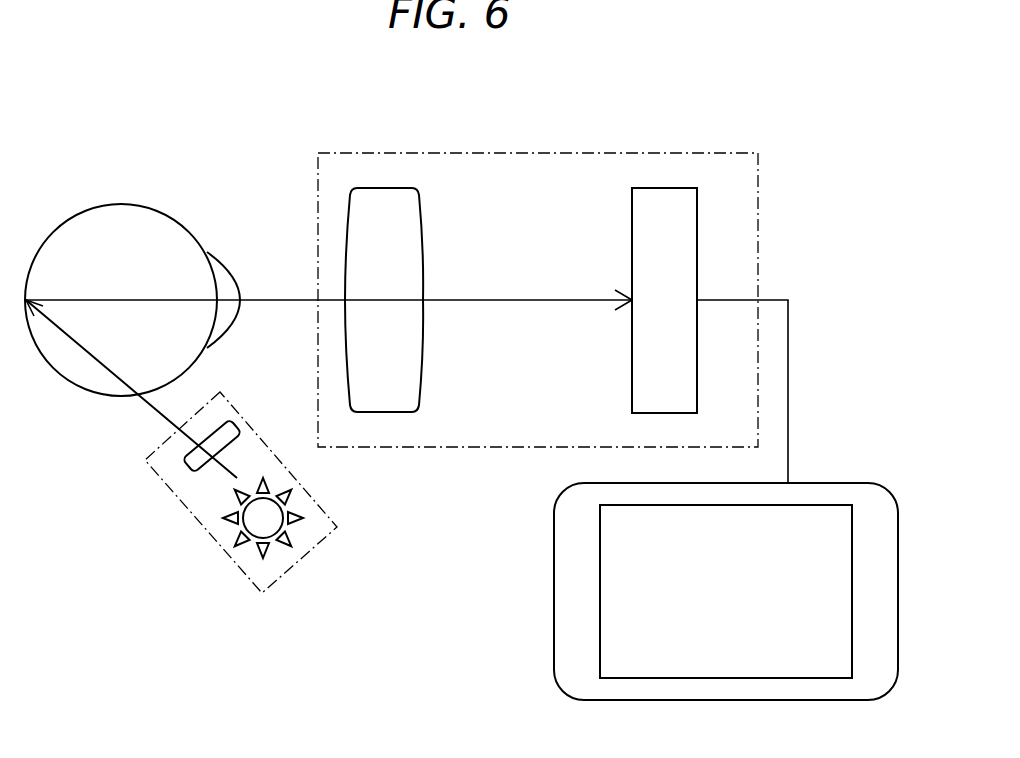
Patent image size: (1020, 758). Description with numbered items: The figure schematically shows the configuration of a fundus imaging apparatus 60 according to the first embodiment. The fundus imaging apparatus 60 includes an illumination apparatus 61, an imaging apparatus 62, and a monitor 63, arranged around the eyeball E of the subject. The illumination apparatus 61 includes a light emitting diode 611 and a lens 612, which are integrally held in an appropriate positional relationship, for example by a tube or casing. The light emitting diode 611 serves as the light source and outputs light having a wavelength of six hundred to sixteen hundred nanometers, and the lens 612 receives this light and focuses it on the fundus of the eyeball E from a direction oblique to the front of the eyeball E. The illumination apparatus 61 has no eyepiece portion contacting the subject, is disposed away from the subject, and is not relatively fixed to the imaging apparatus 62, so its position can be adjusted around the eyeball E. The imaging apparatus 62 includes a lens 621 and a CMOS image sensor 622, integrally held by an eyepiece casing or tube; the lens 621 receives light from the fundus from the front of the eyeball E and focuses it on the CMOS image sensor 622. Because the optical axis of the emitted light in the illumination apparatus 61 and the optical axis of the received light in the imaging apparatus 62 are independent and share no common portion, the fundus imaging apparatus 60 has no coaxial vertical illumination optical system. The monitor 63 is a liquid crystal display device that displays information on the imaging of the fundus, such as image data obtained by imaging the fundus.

The fundus imaging apparatus 60 is at (820, 98).
The illumination apparatus 61 is at (253, 583).
The light emitting diode (LED) 611 is at (240, 522).
The lens 612 is at (190, 459).
The imaging apparatus 62 is at (585, 153).
The lens 621 is at (393, 188).
The CMOS image sensor 622 is at (665, 188).
The monitor 63 is at (847, 483).
The eyeball E is at (167, 214).